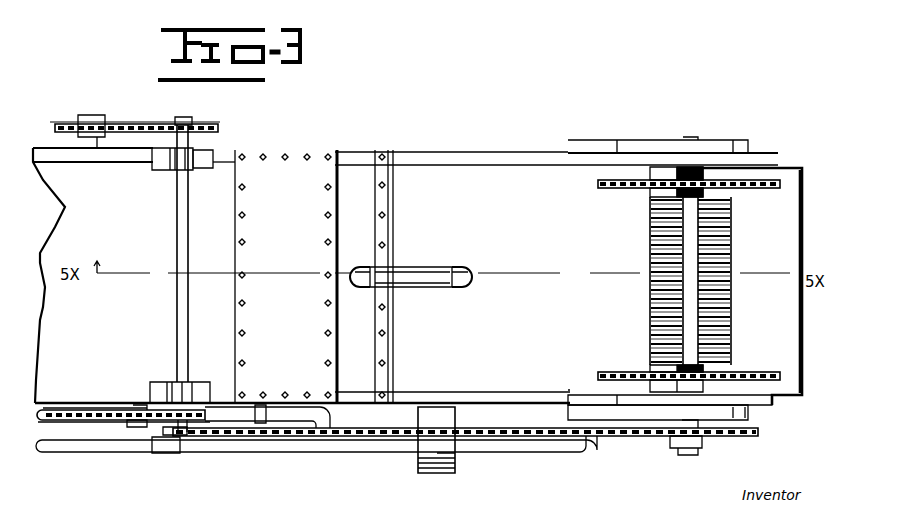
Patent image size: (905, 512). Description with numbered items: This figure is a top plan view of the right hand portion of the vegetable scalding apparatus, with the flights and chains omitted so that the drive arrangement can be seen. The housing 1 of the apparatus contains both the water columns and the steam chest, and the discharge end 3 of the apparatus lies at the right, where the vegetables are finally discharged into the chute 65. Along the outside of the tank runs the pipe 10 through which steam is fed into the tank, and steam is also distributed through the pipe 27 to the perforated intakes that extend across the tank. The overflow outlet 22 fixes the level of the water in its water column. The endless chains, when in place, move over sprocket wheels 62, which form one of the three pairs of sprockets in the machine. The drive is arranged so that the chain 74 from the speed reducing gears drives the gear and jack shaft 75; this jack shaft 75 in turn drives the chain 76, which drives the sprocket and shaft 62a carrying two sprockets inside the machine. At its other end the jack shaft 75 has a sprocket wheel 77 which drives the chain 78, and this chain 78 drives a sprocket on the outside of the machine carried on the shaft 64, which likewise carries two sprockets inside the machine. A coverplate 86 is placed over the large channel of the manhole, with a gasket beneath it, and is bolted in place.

The housing 1 is at (452, 150).
The discharge end 3 is at (778, 162).
The steam feed pipe 10 is at (308, 452).
The overflow outlet 22 is at (432, 473).
The steam distribution pipe 27 is at (289, 407).
The sprocket wheels 62 is at (626, 191).
The sprocket and shaft 62a is at (698, 452).
The shaft 64 is at (86, 115).
The chute 65 is at (790, 216).
The chain 74 is at (110, 410).
The jack shaft 75 is at (180, 303).
The chain 76 is at (637, 438).
The sprocket wheel 77 is at (195, 128).
The chain 78 is at (137, 122).
The coverplate 86 is at (240, 213).